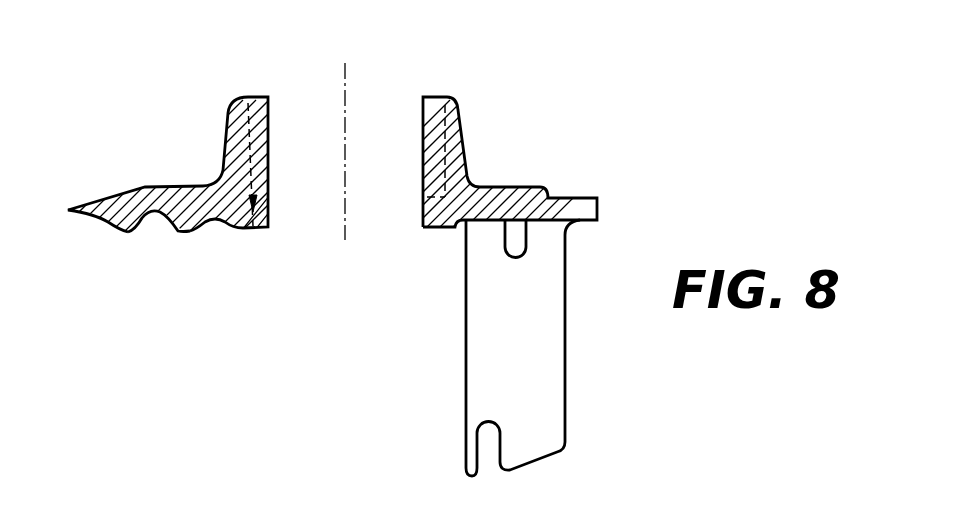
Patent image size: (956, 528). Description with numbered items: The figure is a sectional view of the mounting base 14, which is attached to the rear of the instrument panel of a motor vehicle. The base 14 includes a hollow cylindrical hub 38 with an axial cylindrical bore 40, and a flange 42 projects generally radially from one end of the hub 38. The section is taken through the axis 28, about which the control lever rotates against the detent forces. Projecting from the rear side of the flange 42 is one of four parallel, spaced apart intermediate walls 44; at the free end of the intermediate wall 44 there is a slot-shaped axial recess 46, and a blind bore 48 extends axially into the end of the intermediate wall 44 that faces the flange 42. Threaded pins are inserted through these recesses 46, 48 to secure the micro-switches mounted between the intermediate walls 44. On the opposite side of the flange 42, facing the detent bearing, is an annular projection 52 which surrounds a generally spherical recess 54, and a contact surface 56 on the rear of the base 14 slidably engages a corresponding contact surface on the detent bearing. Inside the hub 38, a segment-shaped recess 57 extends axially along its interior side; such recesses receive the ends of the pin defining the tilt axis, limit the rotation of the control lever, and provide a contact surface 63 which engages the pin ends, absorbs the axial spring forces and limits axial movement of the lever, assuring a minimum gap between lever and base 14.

The mounting base 14 is at (641, 154).
The axis 28 is at (343, 80).
The hollow cylindrical hub 38 is at (459, 115).
The axial cylindrical bore 40 is at (422, 120).
The flange 42 is at (571, 197).
The intermediate wall 44 is at (565, 335).
The slot-shaped axial recess 46 is at (485, 448).
The blind bore 48 is at (518, 250).
The annular projection 52 is at (123, 230).
The spherical recess 54 is at (160, 222).
The contact surface 56 is at (242, 227).
The segment-shaped recess 57 is at (230, 117).
The contact surface 63 is at (256, 230).